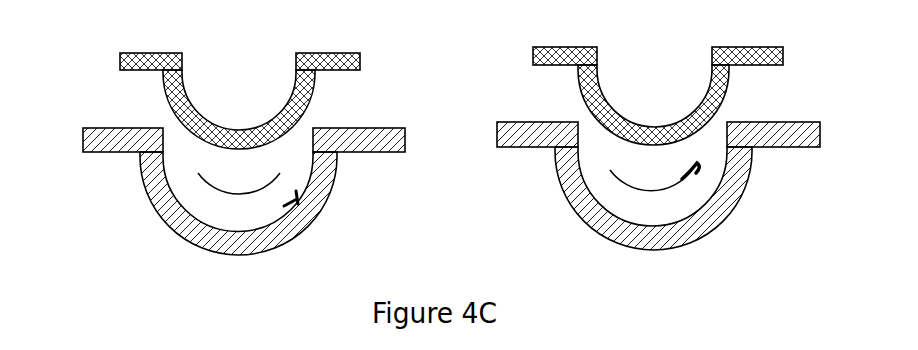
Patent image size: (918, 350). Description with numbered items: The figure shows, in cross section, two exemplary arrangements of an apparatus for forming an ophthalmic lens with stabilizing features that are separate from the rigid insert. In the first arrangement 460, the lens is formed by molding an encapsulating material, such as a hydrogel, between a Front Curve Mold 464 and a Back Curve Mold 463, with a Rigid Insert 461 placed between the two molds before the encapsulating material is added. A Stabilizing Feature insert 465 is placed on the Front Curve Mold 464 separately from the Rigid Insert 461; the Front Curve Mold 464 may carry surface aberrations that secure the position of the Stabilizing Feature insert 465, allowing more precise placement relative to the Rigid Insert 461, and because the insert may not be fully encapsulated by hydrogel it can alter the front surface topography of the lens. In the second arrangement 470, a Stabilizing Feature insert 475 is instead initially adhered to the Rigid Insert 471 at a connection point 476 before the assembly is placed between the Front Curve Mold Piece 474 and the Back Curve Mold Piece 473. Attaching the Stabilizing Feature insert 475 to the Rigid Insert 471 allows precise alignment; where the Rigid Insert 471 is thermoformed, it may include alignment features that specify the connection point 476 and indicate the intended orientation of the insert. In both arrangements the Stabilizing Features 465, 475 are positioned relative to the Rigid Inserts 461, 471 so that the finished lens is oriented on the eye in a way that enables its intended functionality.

The first cup-shaped electrode assembly 460 is at (225, 150).
The Rigid Insert 461 is at (212, 188).
The Back Curve Mold 463 is at (120, 52).
The Front Curve Mold 464 is at (83, 130).
The Stabilizing Feature insert 465 is at (290, 208).
The second cup-shaped electrode assembly 470 is at (675, 150).
The Rigid Insert 471 is at (623, 182).
The Back Curve Mold Piece 473 is at (783, 52).
The Front Curve Mold Piece 474 is at (821, 133).
The Stabilizing Feature insert 475 is at (697, 178).
The connection point 476 is at (688, 180).